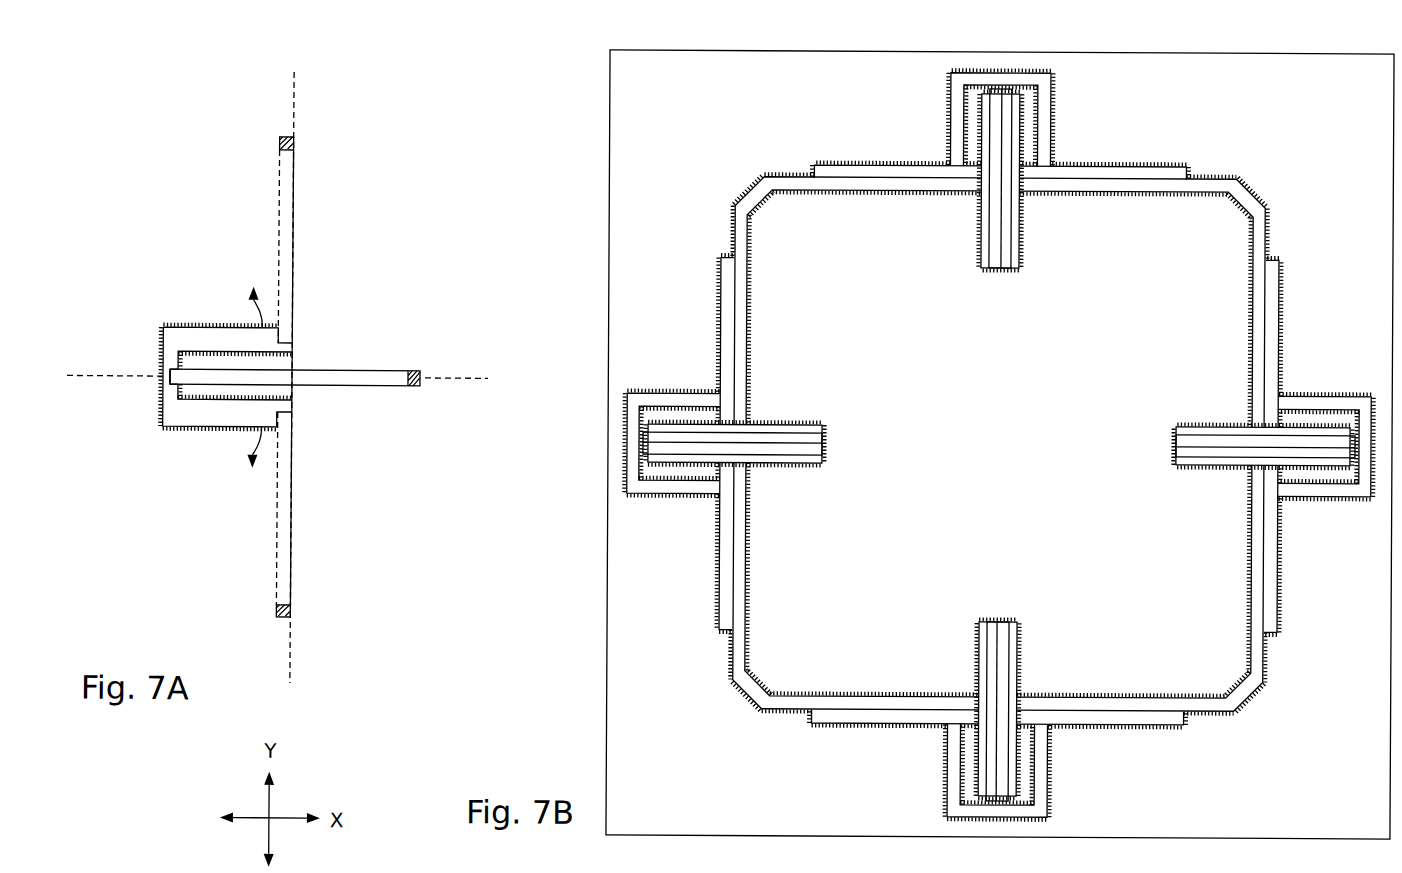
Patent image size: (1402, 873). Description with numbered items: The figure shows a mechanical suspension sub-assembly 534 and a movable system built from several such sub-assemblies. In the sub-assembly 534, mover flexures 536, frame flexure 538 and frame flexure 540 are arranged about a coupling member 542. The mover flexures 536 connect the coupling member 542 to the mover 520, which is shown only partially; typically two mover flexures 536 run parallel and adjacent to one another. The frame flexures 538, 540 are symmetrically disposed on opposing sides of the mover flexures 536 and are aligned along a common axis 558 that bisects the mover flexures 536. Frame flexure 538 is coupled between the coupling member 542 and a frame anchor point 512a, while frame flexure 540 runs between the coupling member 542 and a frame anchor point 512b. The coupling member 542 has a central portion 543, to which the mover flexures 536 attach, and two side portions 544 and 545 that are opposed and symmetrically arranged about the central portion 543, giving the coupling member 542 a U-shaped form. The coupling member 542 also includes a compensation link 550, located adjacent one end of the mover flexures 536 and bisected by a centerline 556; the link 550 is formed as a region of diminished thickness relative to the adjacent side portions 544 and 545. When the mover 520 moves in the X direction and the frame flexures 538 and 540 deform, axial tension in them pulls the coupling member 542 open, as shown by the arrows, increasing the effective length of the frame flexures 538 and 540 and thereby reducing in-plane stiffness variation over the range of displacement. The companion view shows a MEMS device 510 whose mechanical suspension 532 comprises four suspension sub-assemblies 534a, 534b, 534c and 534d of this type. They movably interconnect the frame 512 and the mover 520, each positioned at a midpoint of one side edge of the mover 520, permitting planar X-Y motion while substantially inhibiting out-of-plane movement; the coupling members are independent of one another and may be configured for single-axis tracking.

In FIG. 7B, the MEMS device 510 is at (583, 78).
In FIG. 7B, the frame 512 is at (606, 573).
In FIG. 7A, the frame anchor point 512a is at (276, 610).
In FIG. 7A, the frame anchor point 512b is at (278, 141).
In FIG. 7A, the mover 520 is at (413, 370).
In FIG. 7B, the mover 520 is at (736, 660).
In FIG. 7B, the mechanical suspension 532 is at (735, 158).
In FIG. 7A, the suspension sub-assembly 534 is at (132, 226).
In FIG. 7B, the suspension sub-assembly 534a is at (688, 380).
In FIG. 7B, the suspension sub-assembly 534b is at (938, 134).
In FIG. 7B, the suspension sub-assembly 534c is at (1390, 339).
In FIG. 7B, the suspension sub-assembly 534d is at (932, 762).
In FIG. 7A, the mover flexure 536 is at (327, 383).
In FIG. 7A, the frame flexure 538 is at (290, 573).
In FIG. 7A, the frame flexure 540 is at (290, 240).
In FIG. 7A, the coupling member 542 is at (161, 328).
In FIG. 7A, the central portion 543 is at (177, 360).
In FIG. 7A, the side portion 544 is at (220, 428).
In FIG. 7A, the side portion 545 is at (220, 327).
In FIG. 7A, the compensation link 550 is at (163, 380).
In FIG. 7A, the centerline 556 is at (448, 380).
In FIG. 7A, the common axis 558 is at (292, 97).